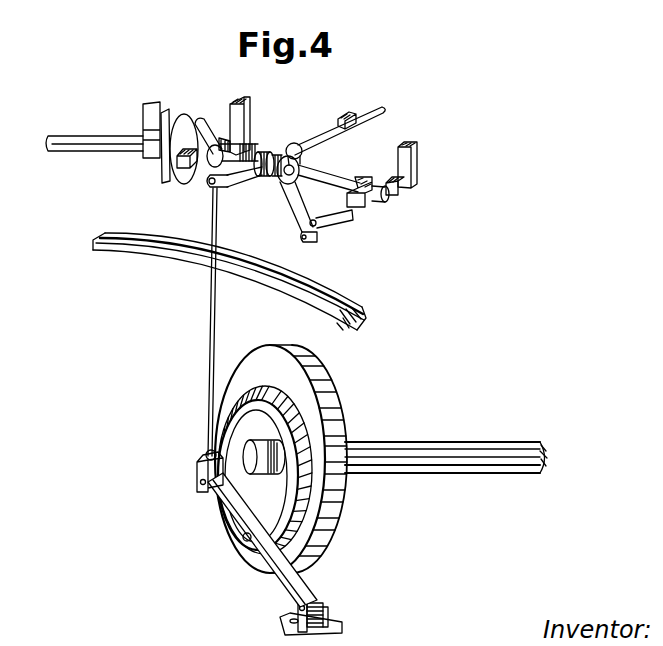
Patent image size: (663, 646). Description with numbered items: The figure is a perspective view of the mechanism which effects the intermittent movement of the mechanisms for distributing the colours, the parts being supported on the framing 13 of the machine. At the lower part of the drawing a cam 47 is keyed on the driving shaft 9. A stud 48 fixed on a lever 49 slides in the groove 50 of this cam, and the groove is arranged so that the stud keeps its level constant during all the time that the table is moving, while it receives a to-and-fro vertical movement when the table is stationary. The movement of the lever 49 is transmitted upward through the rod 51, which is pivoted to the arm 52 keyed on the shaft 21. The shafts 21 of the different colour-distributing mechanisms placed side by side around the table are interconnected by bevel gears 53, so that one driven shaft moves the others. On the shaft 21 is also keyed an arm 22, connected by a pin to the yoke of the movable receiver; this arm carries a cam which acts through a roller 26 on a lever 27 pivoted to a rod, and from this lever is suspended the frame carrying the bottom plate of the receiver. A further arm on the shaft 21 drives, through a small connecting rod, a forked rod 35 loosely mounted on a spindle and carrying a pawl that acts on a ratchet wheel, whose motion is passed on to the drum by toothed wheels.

The driving shaft 9 is at (422, 449).
The framing 13 is at (233, 112).
The shaft 21 is at (327, 175).
The arm 22 is at (299, 222).
The roller 26 is at (292, 143).
The lever 27 is at (327, 129).
The forked rod 35 is at (201, 120).
The cam 47 is at (333, 423).
The stud 48 is at (244, 540).
The lever 49 is at (290, 588).
The groove 50 is at (306, 510).
The rod 51 is at (208, 321).
The arm 52 is at (258, 174).
The bevel gears 53 is at (179, 173).